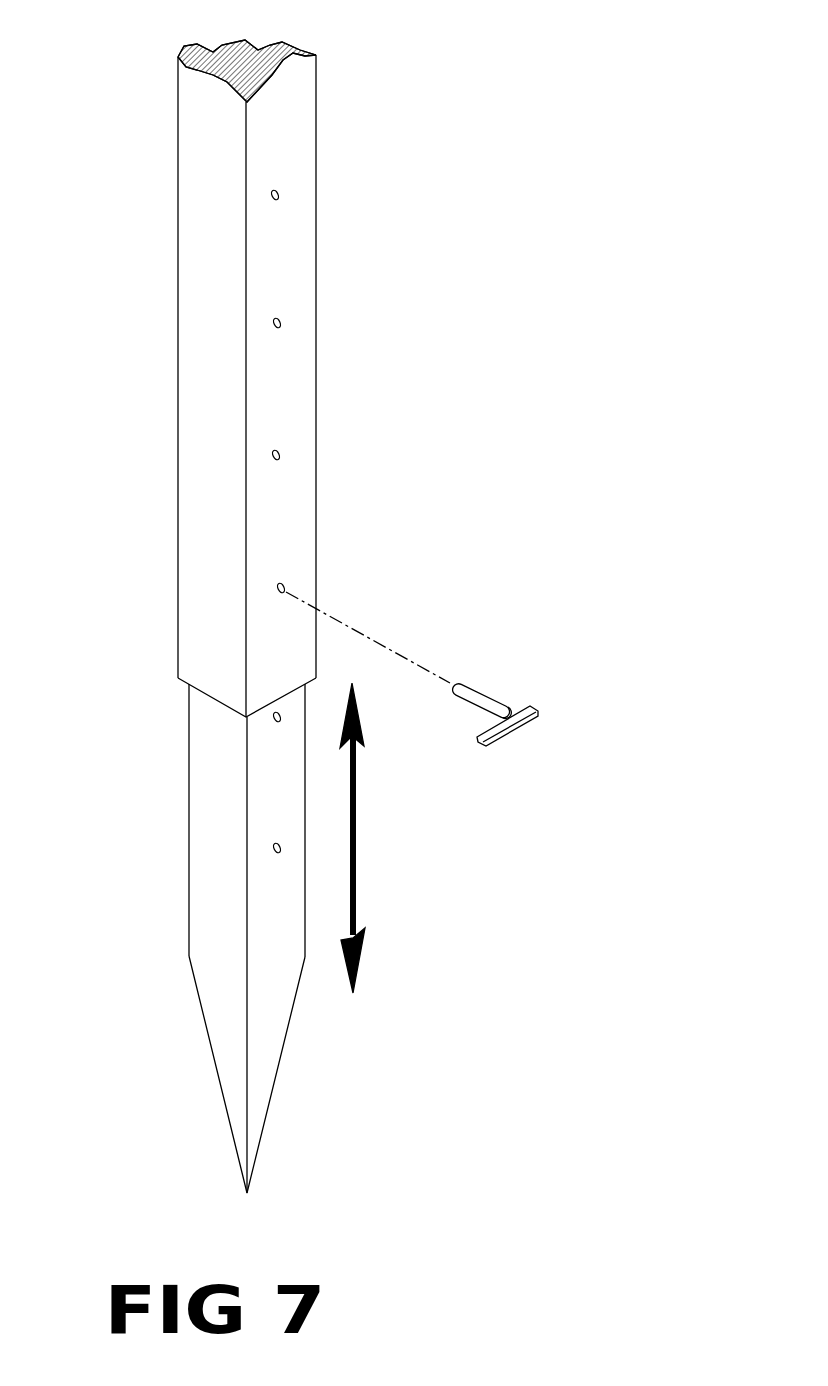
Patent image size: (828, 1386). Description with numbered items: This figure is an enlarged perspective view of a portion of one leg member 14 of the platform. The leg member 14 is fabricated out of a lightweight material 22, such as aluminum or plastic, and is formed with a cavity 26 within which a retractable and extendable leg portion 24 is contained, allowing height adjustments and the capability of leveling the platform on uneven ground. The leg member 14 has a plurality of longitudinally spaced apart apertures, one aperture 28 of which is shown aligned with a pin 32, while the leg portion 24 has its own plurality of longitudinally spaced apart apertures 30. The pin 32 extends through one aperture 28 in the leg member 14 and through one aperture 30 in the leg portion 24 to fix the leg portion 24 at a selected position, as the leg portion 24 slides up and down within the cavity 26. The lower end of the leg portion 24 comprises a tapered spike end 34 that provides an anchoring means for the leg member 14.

The leg member 14 is at (317, 342).
The lightweight material 22 is at (197, 45).
The cavity 26 is at (277, 48).
The aperture 28 is at (275, 190).
The apertures 30 is at (246, 717).
The leg portion 24 is at (208, 942).
The pin 32 is at (480, 700).
The tapered spike end 34 is at (267, 1038).